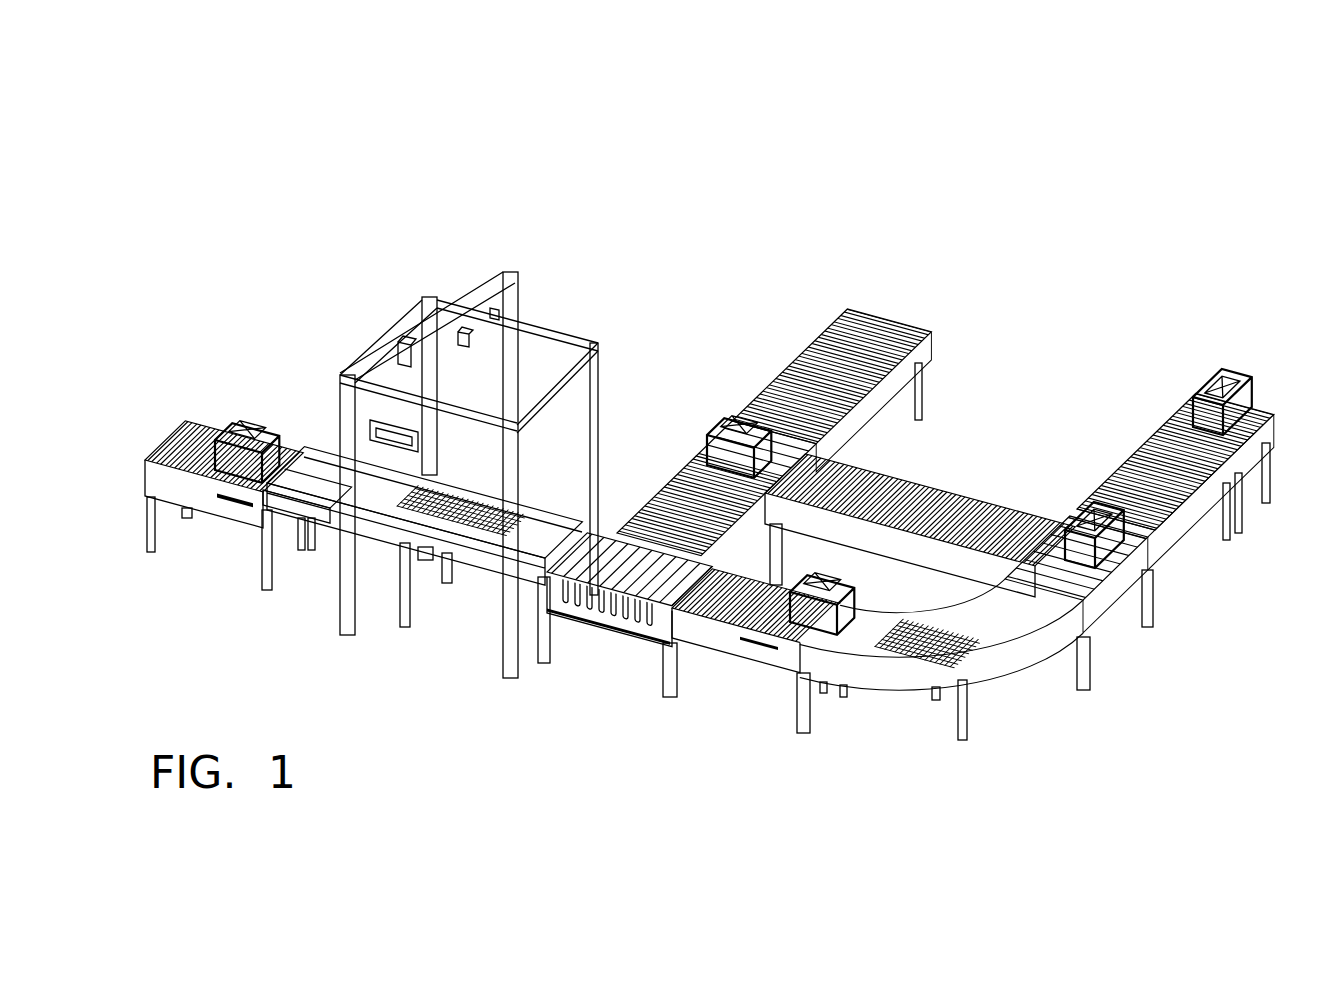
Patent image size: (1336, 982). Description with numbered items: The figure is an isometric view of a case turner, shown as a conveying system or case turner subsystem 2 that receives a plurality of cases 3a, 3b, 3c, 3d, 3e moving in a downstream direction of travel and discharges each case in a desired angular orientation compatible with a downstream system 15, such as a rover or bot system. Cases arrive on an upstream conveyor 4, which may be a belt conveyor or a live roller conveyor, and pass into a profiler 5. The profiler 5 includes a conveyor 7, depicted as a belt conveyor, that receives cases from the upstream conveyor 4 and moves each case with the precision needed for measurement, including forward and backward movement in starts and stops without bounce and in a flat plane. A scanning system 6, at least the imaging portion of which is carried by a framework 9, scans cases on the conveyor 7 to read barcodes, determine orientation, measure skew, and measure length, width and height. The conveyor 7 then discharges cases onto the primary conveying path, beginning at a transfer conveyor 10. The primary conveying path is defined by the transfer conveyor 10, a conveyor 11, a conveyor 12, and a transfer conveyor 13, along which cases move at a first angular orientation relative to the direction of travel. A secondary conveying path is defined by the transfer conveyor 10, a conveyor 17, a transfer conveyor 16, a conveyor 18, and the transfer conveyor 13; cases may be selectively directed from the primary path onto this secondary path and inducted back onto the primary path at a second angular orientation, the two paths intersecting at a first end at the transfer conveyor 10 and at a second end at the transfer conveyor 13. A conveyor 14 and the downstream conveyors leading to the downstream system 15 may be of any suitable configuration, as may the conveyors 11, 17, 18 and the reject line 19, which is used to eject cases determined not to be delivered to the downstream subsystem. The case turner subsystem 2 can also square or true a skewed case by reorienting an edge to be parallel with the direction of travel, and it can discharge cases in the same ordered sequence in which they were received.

The case turner subsystem 2 is at (791, 132).
The case 3a is at (1232, 368).
The case 3b is at (1063, 513).
The case 3c is at (820, 578).
The case 3d is at (717, 422).
The case 3e is at (250, 428).
The upstream conveyor 4 is at (198, 428).
The profiler 5 is at (442, 240).
The scanning system 6 is at (465, 328).
The conveyor 7 is at (487, 490).
The framework 9 is at (458, 407).
The transfer conveyor 10 is at (602, 617).
The conveyor 11 is at (735, 647).
The conveyor 12 is at (933, 602).
The transfer conveyor 13 is at (1060, 508).
The conveyor 14 is at (1130, 457).
The downstream system 15 is at (1177, 402).
The transfer conveyor 16 is at (683, 432).
The conveyor 17 is at (633, 513).
The conveyor 18 is at (900, 477).
The reject line 19 is at (797, 350).